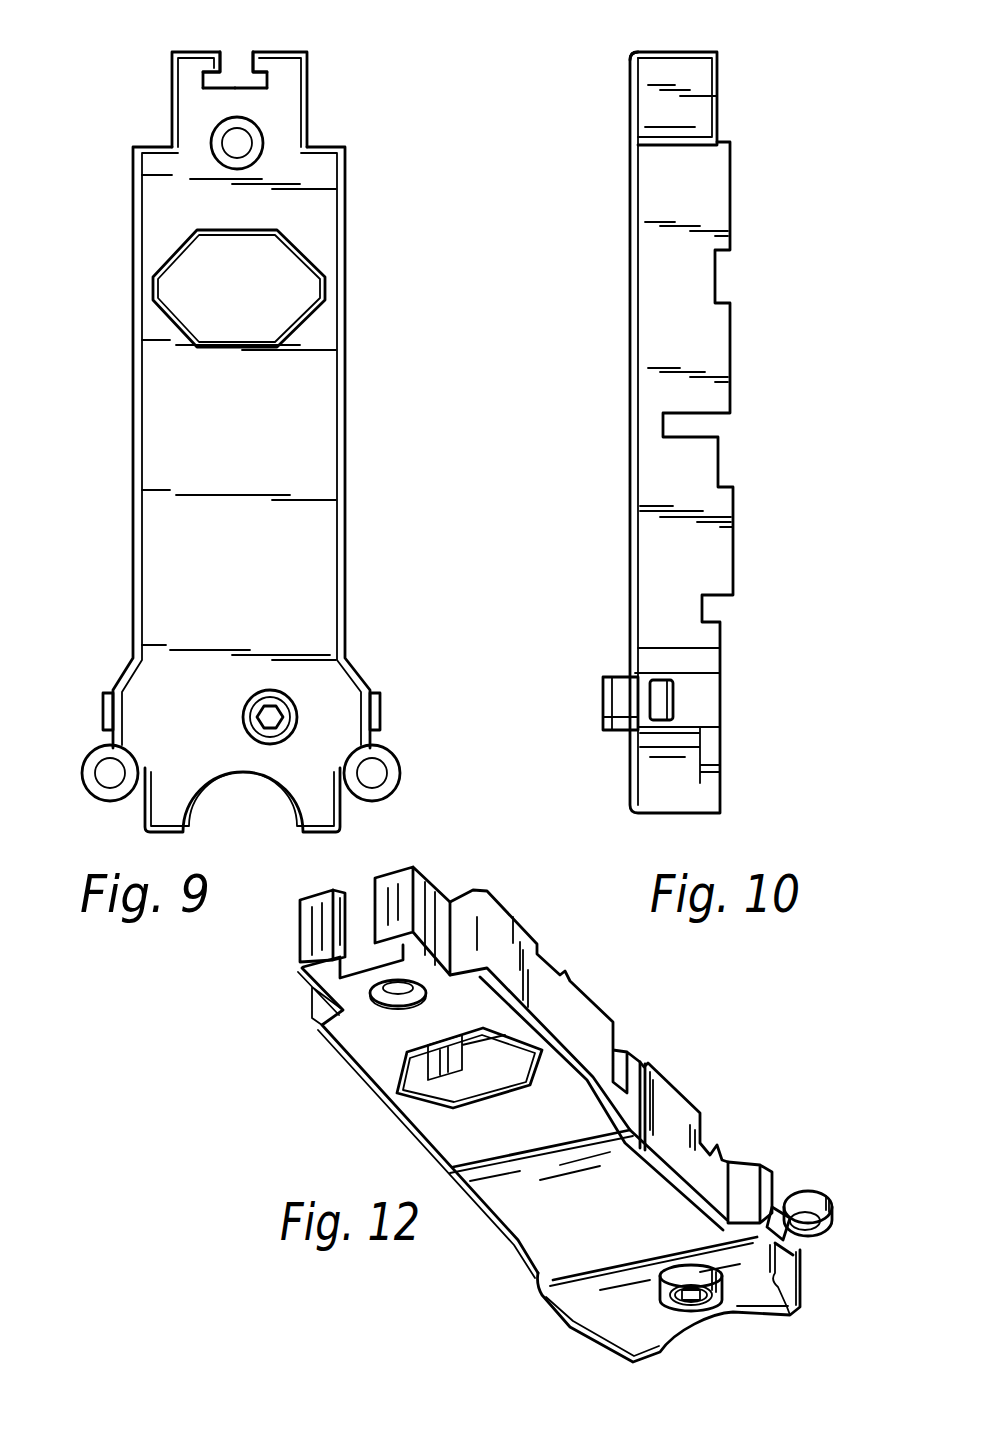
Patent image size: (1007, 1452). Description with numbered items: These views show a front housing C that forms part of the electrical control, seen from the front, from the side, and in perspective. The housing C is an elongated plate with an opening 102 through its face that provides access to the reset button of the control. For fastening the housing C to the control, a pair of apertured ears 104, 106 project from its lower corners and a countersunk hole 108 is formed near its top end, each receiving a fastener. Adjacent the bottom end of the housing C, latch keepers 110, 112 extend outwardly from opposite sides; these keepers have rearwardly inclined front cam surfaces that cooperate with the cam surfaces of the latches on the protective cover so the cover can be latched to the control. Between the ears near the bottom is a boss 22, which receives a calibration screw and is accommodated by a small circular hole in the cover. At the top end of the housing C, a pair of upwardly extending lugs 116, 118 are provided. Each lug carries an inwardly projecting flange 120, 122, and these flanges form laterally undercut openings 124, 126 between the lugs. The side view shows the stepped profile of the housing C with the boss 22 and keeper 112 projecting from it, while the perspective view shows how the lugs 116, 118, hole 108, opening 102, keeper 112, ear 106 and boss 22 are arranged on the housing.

In FIG. 9, the front housing C is at (358, 431).
In FIG. 9, the boss 22 is at (280, 717).
In FIG. 10, the boss 22 is at (603, 700).
In FIG. 12, the boss 22 is at (692, 1302).
In FIG. 9, the opening 102 is at (300, 267).
In FIG. 12, the opening 102 is at (492, 1097).
In FIG. 9, the apertured ear 104 is at (105, 790).
In FIG. 9, the apertured ear 106 is at (383, 793).
In FIG. 12, the apertured ear 106 is at (805, 1192).
In FIG. 12, the countersunk hole 108 is at (390, 1012).
In FIG. 9, the latch keeper 110 is at (103, 712).
In FIG. 9, the latch keeper 112 is at (380, 708).
In FIG. 10, the latch keeper 112 is at (672, 700).
In FIG. 12, the latch keeper 112 is at (772, 1207).
In FIG. 9, the lug 116 is at (197, 67).
In FIG. 12, the lug 116 is at (318, 935).
In FIG. 9, the lug 118 is at (282, 72).
In FIG. 10, the lug 118 is at (673, 47).
In FIG. 12, the lug 118 is at (387, 902).
In FIG. 9, the inwardly projecting flange 120 is at (222, 62).
In FIG. 9, the inwardly projecting flange 122 is at (256, 62).
In FIG. 9, the laterally undercut opening 124 is at (207, 90).
In FIG. 9, the laterally undercut opening 126 is at (263, 90).